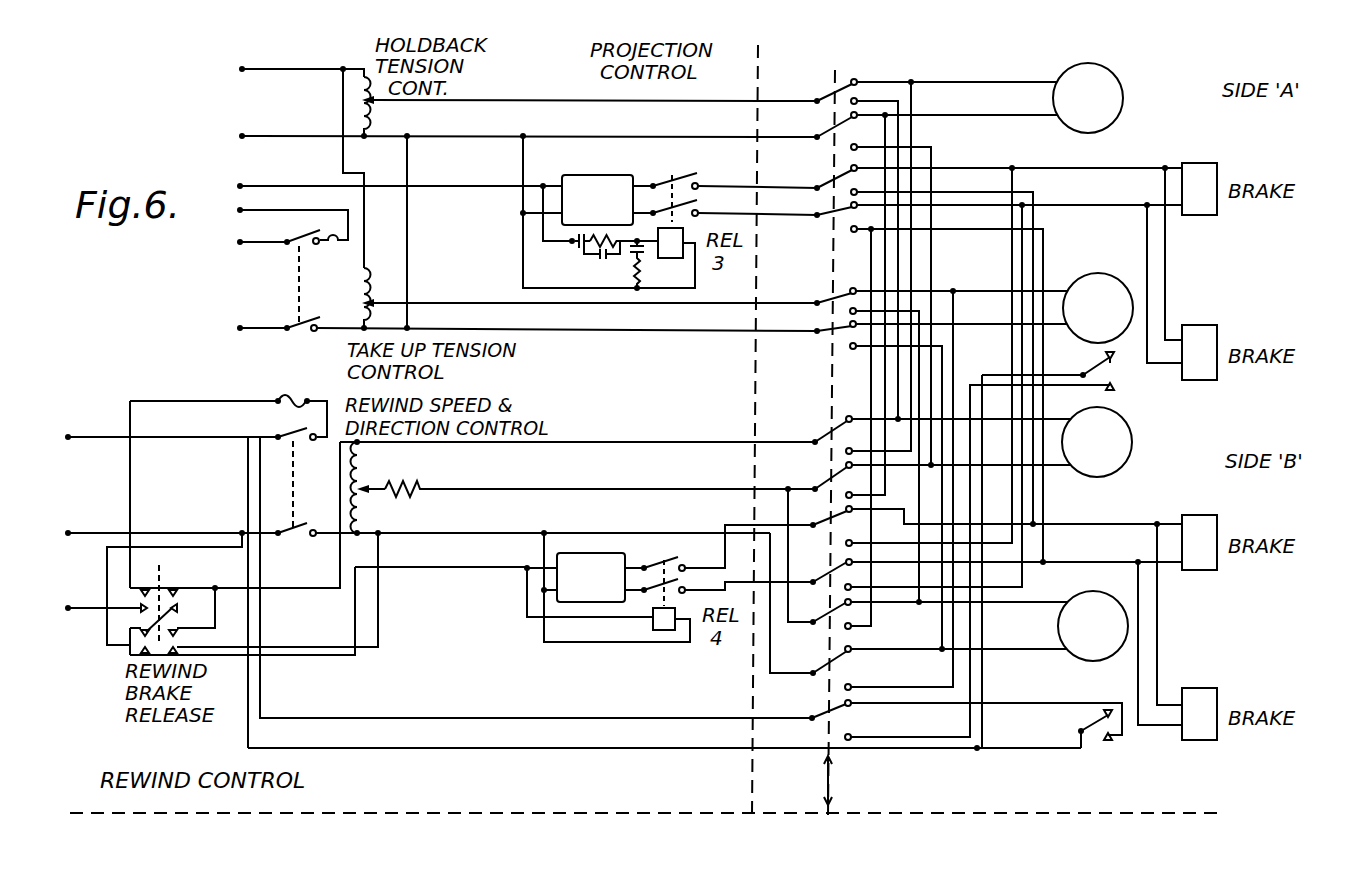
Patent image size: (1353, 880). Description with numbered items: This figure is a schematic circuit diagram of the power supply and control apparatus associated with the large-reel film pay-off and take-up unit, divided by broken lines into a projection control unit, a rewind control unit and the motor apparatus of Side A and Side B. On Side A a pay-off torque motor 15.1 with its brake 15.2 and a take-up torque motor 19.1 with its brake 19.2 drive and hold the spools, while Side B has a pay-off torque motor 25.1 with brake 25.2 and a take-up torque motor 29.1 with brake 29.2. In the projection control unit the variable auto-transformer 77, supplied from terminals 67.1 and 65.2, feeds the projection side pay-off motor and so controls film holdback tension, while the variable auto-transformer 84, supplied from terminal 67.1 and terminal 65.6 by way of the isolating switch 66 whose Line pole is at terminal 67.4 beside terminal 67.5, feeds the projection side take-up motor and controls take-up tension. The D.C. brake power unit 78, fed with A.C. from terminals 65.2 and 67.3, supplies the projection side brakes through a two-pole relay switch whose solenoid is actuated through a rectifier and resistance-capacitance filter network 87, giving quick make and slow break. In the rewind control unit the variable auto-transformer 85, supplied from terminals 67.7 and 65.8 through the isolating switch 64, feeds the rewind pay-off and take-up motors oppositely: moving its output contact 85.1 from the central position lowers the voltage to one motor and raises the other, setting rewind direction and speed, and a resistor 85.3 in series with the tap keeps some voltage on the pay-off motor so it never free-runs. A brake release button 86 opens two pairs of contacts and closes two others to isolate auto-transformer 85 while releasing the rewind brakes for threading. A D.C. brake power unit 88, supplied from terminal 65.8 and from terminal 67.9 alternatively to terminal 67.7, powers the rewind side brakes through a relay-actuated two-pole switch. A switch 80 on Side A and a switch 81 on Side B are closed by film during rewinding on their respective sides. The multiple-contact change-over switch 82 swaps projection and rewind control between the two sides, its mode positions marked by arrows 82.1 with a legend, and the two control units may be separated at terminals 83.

The terminal 67.1 is at (242, 69).
The terminal 65.2 is at (242, 136).
The terminal 67.3 is at (240, 186).
The terminal 67.4 is at (240, 210).
The terminal 67.5 is at (240, 242).
The terminal 65.6 is at (240, 328).
The isolating switch 66 is at (303, 278).
The variable auto-transformer 77 is at (368, 106).
The variable auto-transformer 84 is at (370, 277).
The D.C. brake power unit 78 is at (605, 180).
The rectifier and resistance-capacitance filter network 87 is at (578, 253).
The terminal 67.7 is at (68, 437).
The terminal 65.8 is at (68, 533).
The terminal 67.9 is at (68, 608).
The isolating switch 64 is at (290, 479).
The variable auto-transformer 85 is at (362, 476).
The output contact 85.1 is at (370, 492).
The resistor 85.3 is at (410, 485).
The brake release button 86 is at (162, 580).
The D.C. brake power unit 88 is at (618, 571).
The switch 80 is at (1113, 373).
The switch 81 is at (1098, 731).
The multiple-contact change-over switch 82 is at (811, 722).
The terminals 83 is at (509, 749).
The arrows 82.1 is at (826, 788).
The pay-off torque motor 15.1 is at (1117, 99).
The brake 15.2 is at (1193, 162).
The take-up torque motor 19.1 is at (1117, 268).
The brake 19.2 is at (1193, 324).
The pay-off torque motor 25.1 is at (1131, 441).
The brake 25.2 is at (1193, 514).
The take-up torque motor 29.1 is at (1110, 585).
The brake 29.2 is at (1193, 687).